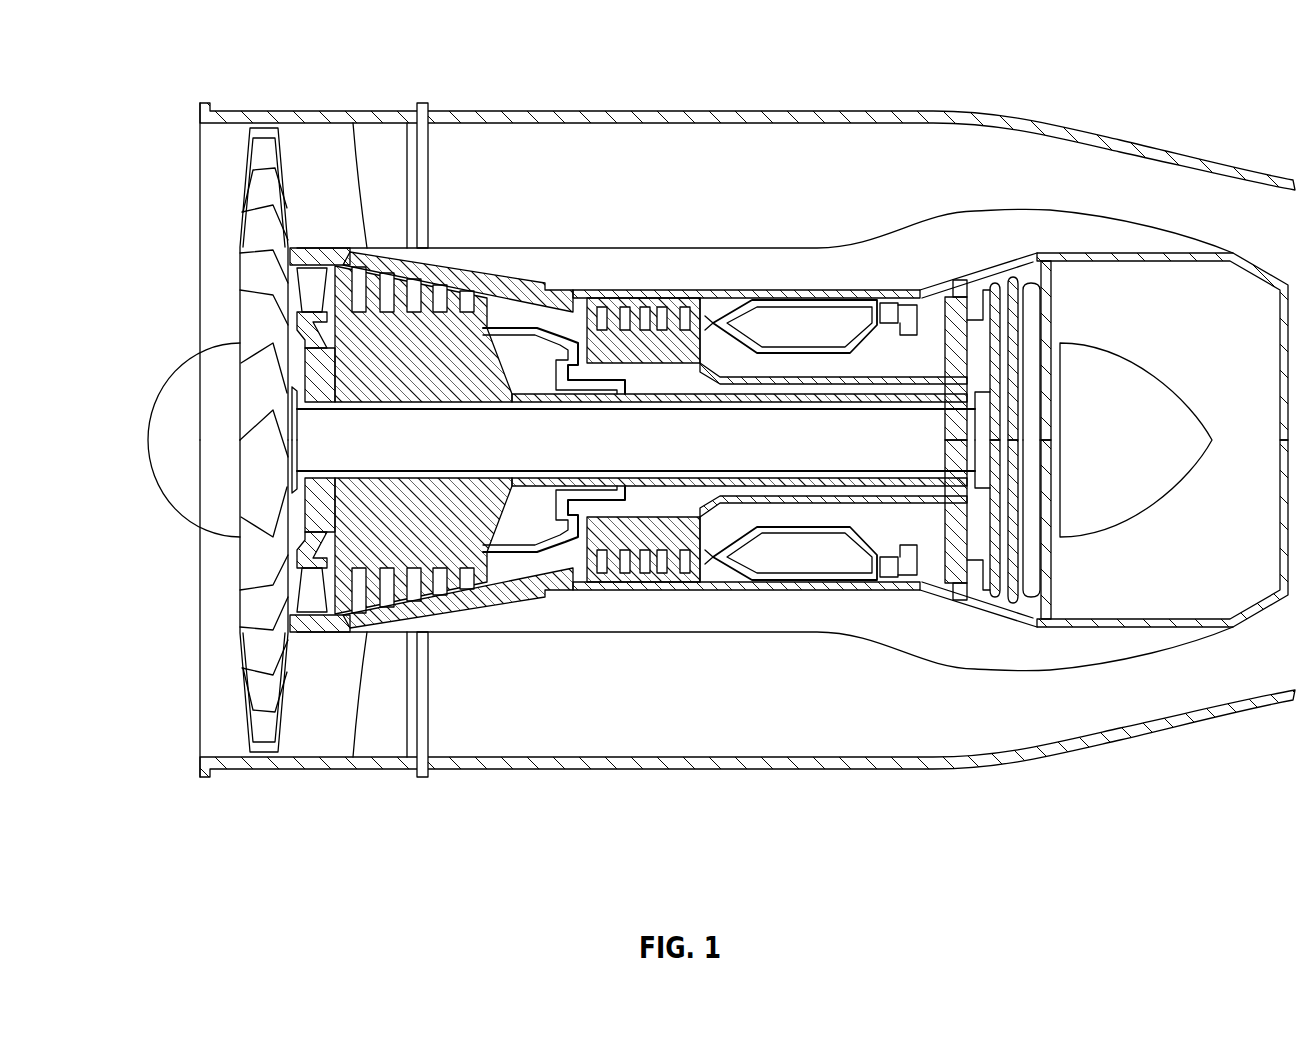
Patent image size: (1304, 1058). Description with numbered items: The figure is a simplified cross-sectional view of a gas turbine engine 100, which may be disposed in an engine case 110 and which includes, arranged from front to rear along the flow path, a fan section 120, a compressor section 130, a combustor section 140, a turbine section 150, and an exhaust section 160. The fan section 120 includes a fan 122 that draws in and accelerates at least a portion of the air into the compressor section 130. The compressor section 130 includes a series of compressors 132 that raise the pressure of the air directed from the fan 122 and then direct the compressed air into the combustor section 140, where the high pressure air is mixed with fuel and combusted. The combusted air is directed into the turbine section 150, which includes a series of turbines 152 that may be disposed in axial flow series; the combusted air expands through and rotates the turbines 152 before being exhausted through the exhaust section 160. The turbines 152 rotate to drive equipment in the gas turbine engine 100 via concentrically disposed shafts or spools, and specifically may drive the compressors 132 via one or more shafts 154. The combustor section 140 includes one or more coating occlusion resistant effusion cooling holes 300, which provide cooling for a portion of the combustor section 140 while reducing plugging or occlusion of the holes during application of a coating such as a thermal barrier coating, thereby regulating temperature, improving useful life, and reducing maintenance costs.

The gas turbine engine 100 is at (1019, 106).
The engine case 110 is at (445, 108).
The fan section 120 is at (313, 820).
The fan 122 is at (256, 251).
The compressor section 130 is at (313, 820).
The compressors 132 is at (473, 388).
The combustor section 140 is at (913, 820).
The turbine section 150 is at (1095, 820).
The turbines 152 is at (912, 667).
The shafts 154 is at (527, 410).
The exhaust section 160 is at (1095, 820).
The effusion cooling holes 300 is at (773, 580).